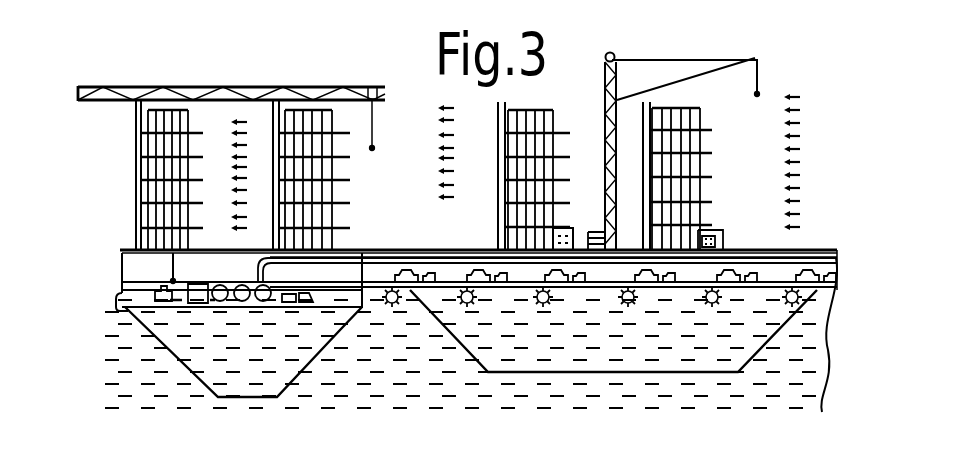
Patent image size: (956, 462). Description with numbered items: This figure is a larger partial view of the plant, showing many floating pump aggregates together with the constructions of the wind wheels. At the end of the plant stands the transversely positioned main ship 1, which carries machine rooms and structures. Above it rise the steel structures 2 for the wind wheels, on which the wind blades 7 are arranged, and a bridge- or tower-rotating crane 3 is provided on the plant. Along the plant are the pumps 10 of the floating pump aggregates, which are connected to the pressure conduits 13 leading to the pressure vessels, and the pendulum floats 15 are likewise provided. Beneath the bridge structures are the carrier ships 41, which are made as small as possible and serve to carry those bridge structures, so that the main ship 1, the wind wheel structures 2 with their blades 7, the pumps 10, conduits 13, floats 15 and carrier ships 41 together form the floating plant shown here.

The main ship 1 is at (193, 355).
The steel structures 2 is at (192, 157).
The bridge- or tower-rotating crane 3 is at (117, 102).
The wind blades 7 is at (137, 222).
The pumps 10 is at (401, 268).
The pressure conduits 13 is at (807, 250).
The pendulum floats 15 is at (457, 258).
The carrier ships 41 is at (738, 330).